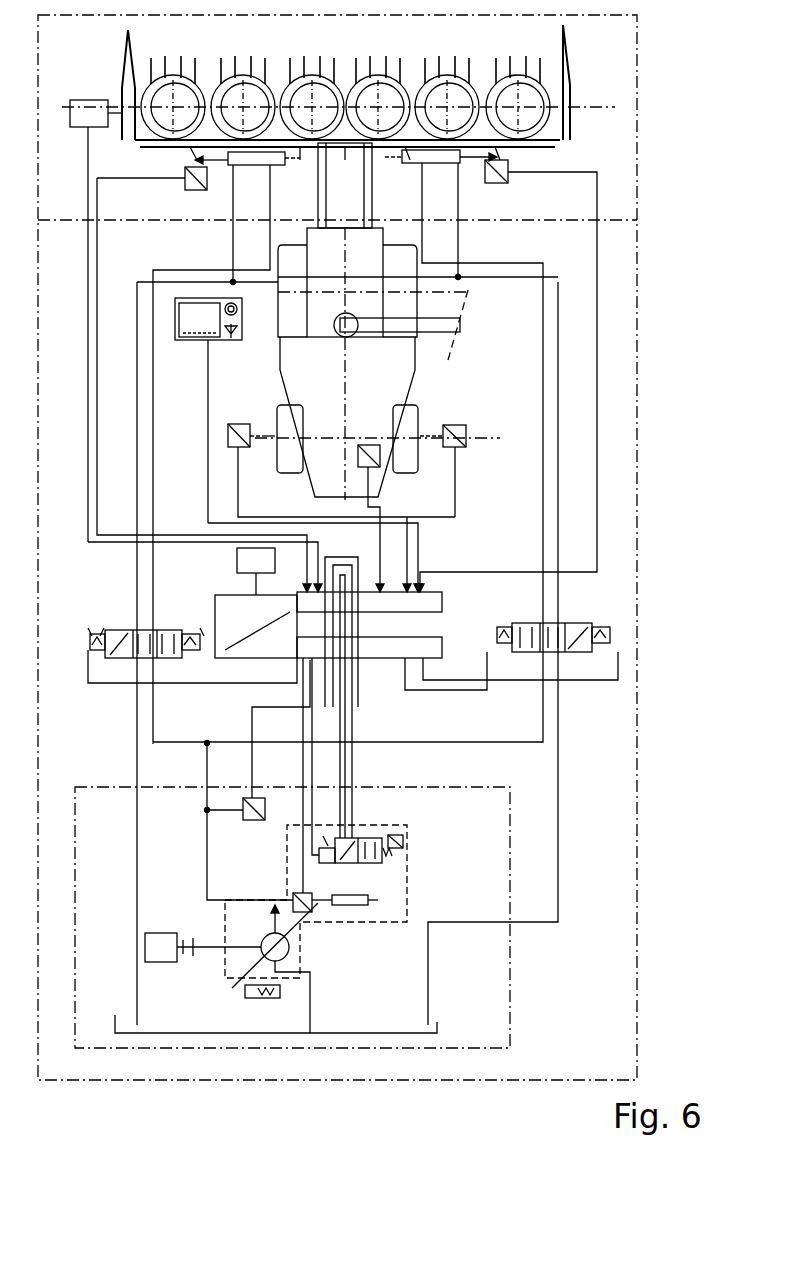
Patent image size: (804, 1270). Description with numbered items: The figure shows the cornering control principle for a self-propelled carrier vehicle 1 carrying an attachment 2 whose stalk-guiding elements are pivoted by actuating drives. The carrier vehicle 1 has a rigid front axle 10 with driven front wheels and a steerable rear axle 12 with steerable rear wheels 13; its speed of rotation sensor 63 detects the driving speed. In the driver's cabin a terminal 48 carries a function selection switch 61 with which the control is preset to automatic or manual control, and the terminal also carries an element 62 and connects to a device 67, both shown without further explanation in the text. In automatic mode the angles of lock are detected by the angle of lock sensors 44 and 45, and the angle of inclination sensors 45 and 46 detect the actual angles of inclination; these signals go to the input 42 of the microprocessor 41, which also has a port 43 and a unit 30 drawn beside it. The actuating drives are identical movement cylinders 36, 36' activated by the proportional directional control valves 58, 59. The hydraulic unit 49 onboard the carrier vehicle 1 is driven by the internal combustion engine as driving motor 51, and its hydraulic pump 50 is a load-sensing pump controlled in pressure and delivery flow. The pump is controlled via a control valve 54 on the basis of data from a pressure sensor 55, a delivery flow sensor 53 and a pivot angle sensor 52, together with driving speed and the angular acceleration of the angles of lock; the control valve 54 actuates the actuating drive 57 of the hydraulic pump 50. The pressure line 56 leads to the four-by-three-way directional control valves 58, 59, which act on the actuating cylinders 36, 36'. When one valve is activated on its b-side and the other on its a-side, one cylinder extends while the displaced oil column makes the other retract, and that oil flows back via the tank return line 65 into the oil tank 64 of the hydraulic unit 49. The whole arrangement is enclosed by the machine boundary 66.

The carrier vehicle 1 is at (615, 300).
The attachment 2 is at (605, 127).
The front axle 10 is at (320, 298).
The rear axle 12 is at (266, 452).
The rear wheels 13 is at (290, 467).
The control unit 30 is at (237, 563).
The actuating cylinder 36 is at (441, 170).
The actuating cylinder 36' is at (247, 173).
The microprocessor 41 is at (225, 612).
The input of the microprocessor 42 is at (443, 602).
The hydraulic control block 43 is at (437, 645).
The angle of lock sensor 44 is at (452, 425).
The angle of lock sensor 45 is at (508, 168).
The angle of inclination sensor 46 is at (185, 172).
The terminal 48 is at (190, 341).
The hydraulic unit 49 is at (520, 956).
The hydraulic pump 50 is at (290, 948).
The driving motor 51 is at (160, 962).
The pivot angle sensor 52 is at (291, 893).
The delivery flow sensor 53 is at (405, 845).
The control valve 54 is at (375, 863).
The pressure sensor 55 is at (256, 822).
The pressure line 56 is at (207, 773).
The actuating drive of the hydraulic pump 57 is at (356, 897).
The proportional directional control valve 58 is at (580, 623).
The proportional directional control valve 59 is at (122, 630).
The function selection switch 61 is at (231, 339).
The rotary knob 62 is at (238, 309).
The speed of rotation sensor 63 is at (368, 445).
The oil tank 64 is at (440, 1022).
The tank return line 65 is at (135, 886).
The machine boundary 66 is at (643, 407).
The control device 67 is at (88, 100).